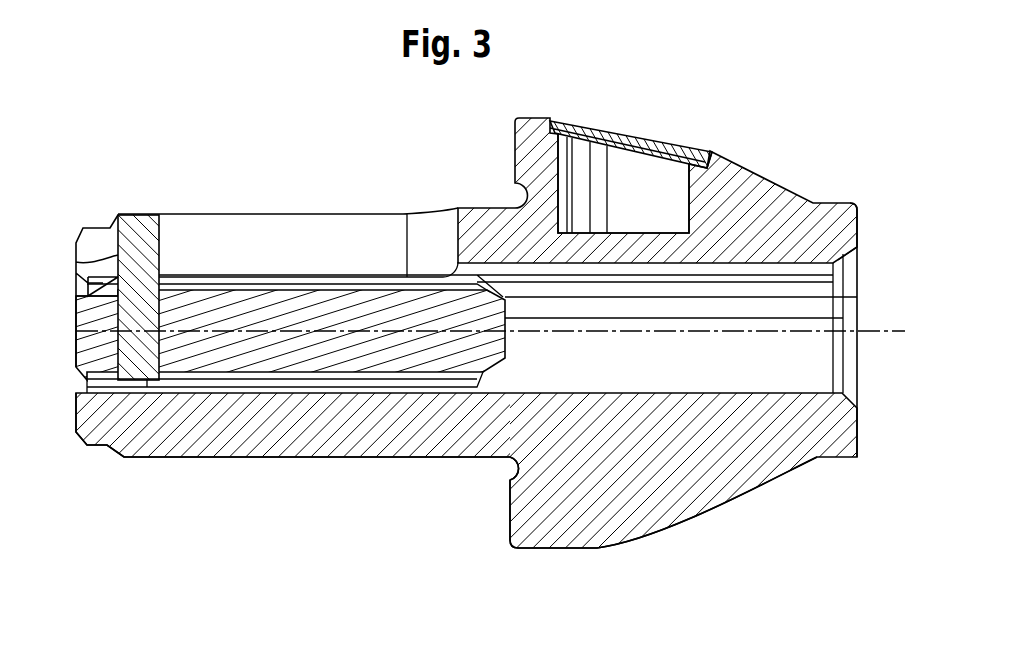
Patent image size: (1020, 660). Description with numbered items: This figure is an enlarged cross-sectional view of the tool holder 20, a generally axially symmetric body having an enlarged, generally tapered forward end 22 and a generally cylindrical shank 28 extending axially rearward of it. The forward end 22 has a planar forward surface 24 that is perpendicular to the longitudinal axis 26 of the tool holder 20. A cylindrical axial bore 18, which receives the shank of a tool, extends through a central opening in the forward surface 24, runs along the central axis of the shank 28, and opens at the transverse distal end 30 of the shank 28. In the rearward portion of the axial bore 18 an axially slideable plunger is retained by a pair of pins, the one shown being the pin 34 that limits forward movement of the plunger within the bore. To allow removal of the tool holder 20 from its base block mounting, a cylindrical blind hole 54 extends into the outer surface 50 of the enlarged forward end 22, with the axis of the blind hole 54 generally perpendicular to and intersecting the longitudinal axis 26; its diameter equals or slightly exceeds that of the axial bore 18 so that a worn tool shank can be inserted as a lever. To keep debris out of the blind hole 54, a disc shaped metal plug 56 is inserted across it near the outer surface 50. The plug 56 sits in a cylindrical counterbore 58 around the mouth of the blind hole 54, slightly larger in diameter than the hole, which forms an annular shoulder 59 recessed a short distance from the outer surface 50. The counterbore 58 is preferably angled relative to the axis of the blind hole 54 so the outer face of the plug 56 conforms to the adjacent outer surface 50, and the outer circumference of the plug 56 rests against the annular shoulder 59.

The axial bore 18 is at (760, 393).
The tool holder 20 is at (740, 509).
The enlarged forward end 22 is at (668, 528).
The forward surface 24 is at (858, 210).
The axis 26 is at (896, 322).
The shank 28 is at (207, 458).
The distal end 30 is at (76, 422).
The pin 34 is at (76, 262).
The outer surface 50 is at (562, 549).
The blind hole 54 is at (689, 232).
The metal plug 56 is at (576, 129).
The counterbore 58 is at (705, 150).
The annular shoulder 59 is at (556, 124).